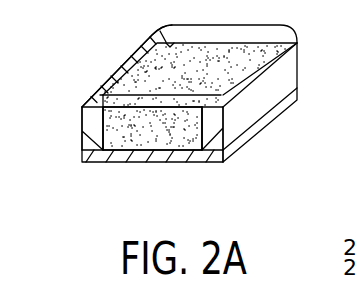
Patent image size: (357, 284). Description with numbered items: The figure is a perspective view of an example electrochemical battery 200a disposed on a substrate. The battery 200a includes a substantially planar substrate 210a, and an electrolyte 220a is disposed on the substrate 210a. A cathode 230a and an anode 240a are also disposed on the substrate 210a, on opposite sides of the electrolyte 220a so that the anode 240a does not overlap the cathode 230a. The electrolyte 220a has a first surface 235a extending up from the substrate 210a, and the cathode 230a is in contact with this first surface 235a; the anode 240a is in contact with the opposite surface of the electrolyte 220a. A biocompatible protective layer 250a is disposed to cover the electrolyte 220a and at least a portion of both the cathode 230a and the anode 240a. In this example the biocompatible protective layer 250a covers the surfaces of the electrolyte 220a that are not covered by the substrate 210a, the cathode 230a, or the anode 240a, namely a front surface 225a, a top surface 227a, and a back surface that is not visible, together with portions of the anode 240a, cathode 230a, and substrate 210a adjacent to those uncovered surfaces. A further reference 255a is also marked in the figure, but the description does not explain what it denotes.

The electrochemical battery 200a is at (299, 66).
The substrate 210a is at (172, 160).
The electrolyte 220a is at (123, 146).
The front surface 225a is at (160, 132).
The top surface 227a is at (183, 70).
The cathode 230a is at (93, 127).
The first surface 235a is at (101, 108).
The anode 240a is at (203, 150).
The biocompatible protective layer 250a is at (135, 93).
The right interface 255a is at (204, 110).